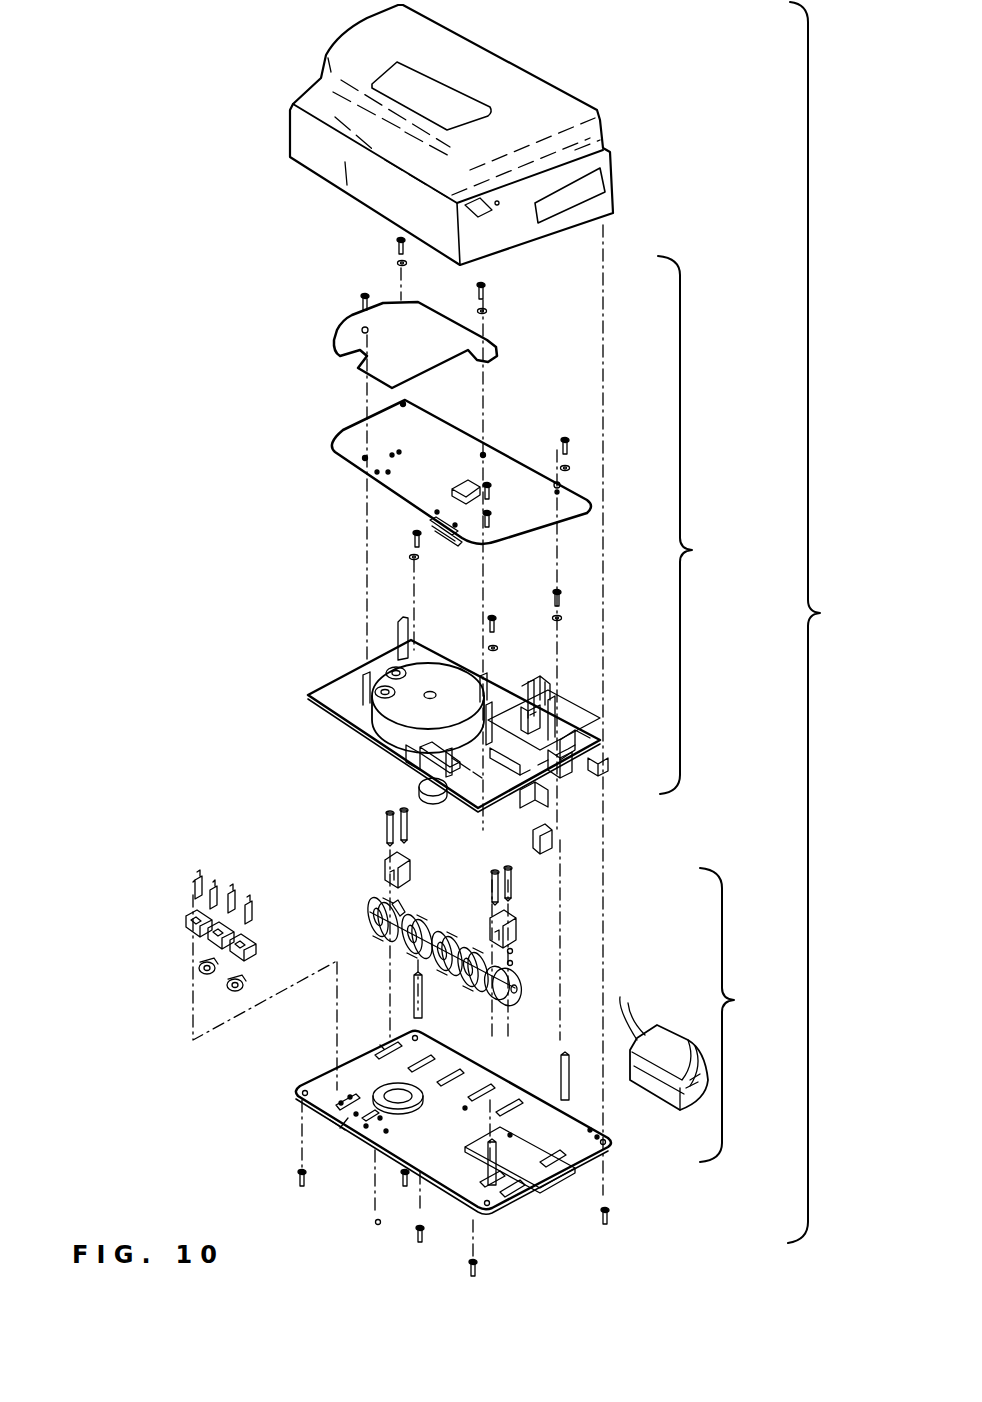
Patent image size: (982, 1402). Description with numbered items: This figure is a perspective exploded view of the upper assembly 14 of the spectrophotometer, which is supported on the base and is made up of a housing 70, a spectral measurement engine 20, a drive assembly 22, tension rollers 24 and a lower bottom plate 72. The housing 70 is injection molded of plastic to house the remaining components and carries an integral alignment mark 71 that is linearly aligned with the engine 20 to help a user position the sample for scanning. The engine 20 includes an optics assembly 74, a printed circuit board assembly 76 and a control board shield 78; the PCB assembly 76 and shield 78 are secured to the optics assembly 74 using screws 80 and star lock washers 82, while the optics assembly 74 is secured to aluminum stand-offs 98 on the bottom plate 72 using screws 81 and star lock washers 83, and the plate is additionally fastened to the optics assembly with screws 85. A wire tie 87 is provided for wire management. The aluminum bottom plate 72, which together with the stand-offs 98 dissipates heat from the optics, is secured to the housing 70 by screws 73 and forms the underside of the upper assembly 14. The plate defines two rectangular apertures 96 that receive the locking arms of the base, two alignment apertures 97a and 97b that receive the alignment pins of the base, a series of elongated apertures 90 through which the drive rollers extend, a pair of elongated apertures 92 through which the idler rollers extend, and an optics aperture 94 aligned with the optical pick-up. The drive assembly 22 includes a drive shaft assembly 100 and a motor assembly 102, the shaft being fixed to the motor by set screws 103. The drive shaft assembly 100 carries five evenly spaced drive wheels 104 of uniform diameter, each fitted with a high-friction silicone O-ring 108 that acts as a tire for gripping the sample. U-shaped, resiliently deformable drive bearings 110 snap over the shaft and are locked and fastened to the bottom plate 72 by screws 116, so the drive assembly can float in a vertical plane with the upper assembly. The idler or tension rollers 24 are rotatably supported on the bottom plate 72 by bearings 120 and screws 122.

The upper assembly 14 is at (824, 622).
The spectral measurement engine 20 is at (698, 525).
The drive assembly 22 is at (738, 1015).
The tension rollers 24 is at (228, 990).
The housing 70 is at (602, 108).
The alignment mark 71 is at (345, 173).
The bottom plate 72 is at (296, 1094).
The screws 73 is at (298, 1180).
The optics assembly 74 is at (303, 695).
The printed circuit board assembly 76 is at (328, 460).
The control board shield 78 is at (330, 349).
The screws 80 is at (398, 240).
The screws 81 is at (414, 535).
The star lock washers 82 is at (397, 263).
The star lock washers 83 is at (410, 558).
The screws 85 is at (420, 1222).
The wire tie 87 is at (545, 690).
The elongated apertures 90 is at (382, 1050).
The elongated apertures 92 is at (340, 1122).
The optics aperture 94 is at (410, 1110).
The rectangular apertures 96 is at (558, 1170).
The alignment aperture 97a is at (598, 1140).
The alignment aperture 97b is at (492, 1215).
The aluminum stand-offs 98 is at (412, 990).
The drive shaft assembly 100 is at (446, 924).
The motor assembly 102 is at (683, 1032).
The set screws 103 is at (515, 963).
The drive wheels 104 is at (398, 902).
The O-rings 108 is at (375, 905).
The drive bearings 110 is at (386, 862).
The screws 116 is at (392, 810).
The bearings 120 is at (186, 918).
The screws 122 is at (196, 880).